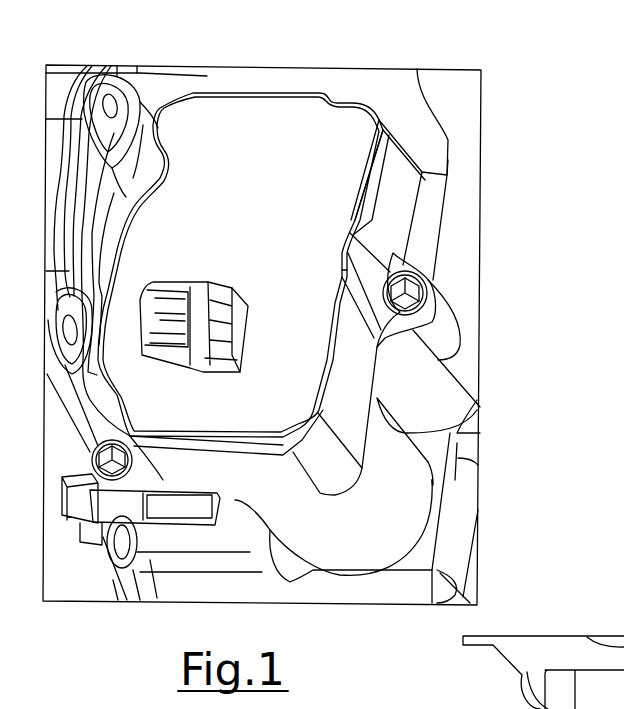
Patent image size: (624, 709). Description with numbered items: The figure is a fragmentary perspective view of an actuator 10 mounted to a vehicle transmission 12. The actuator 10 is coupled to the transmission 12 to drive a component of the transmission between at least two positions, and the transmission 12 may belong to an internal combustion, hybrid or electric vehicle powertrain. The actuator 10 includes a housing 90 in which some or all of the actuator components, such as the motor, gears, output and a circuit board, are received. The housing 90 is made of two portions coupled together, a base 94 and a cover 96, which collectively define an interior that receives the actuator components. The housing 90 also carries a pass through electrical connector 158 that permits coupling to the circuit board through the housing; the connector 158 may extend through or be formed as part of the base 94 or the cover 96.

The actuator 10 is at (345, 103).
The vehicle transmission 12 is at (467, 241).
The housing 90 is at (426, 175).
The base 94 is at (363, 379).
The cover 96 is at (252, 120).
The pass through electrical connector 158 is at (168, 297).